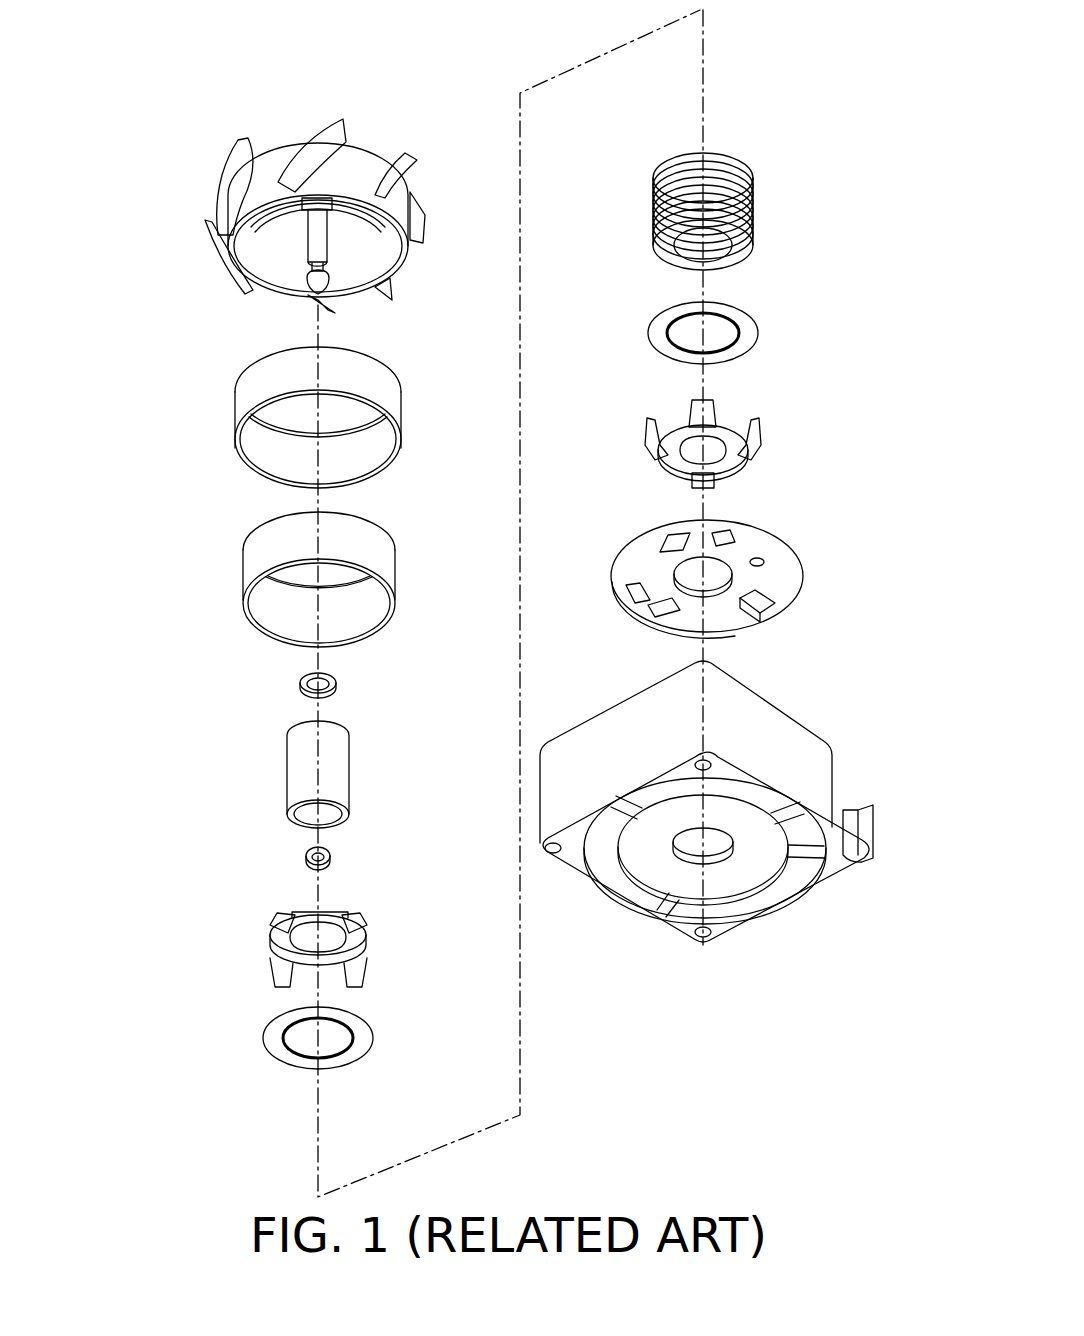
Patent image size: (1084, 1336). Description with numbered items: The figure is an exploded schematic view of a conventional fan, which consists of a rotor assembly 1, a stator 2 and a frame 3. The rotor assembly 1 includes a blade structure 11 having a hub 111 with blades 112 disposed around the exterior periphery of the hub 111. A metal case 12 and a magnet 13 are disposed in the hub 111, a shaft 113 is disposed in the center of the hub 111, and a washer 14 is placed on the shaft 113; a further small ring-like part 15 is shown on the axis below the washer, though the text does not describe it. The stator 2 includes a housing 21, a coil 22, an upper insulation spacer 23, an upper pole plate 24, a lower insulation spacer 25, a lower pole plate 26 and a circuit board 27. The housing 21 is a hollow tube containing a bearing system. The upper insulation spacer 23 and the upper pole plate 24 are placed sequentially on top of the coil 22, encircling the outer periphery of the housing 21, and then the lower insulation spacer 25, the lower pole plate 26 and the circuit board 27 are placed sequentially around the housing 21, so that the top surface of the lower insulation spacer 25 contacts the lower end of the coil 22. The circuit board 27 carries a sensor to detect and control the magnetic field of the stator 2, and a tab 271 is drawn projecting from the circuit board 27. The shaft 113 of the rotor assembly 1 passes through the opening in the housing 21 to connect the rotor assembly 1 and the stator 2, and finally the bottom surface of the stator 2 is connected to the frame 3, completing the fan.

The rotor assembly 1 is at (127, 176).
The blade structure 11 is at (247, 130).
The hub 111 is at (280, 140).
The blades 112 is at (218, 180).
The shaft 113 is at (312, 248).
The metal case 12 is at (235, 408).
The magnet 13 is at (243, 572).
The washer 14 is at (300, 683).
The retaining ring 15 is at (305, 858).
The stator 2 is at (387, 728).
The housing 21 is at (287, 773).
The coil 22 is at (752, 200).
The upper insulation spacer 23 is at (263, 1035).
The upper pole plate 24 is at (270, 930).
The lower insulation spacer 25 is at (757, 332).
The lower pole plate 26 is at (762, 440).
The circuit board 27 is at (803, 580).
The terminal tab 271 is at (770, 615).
The frame 3 is at (790, 713).